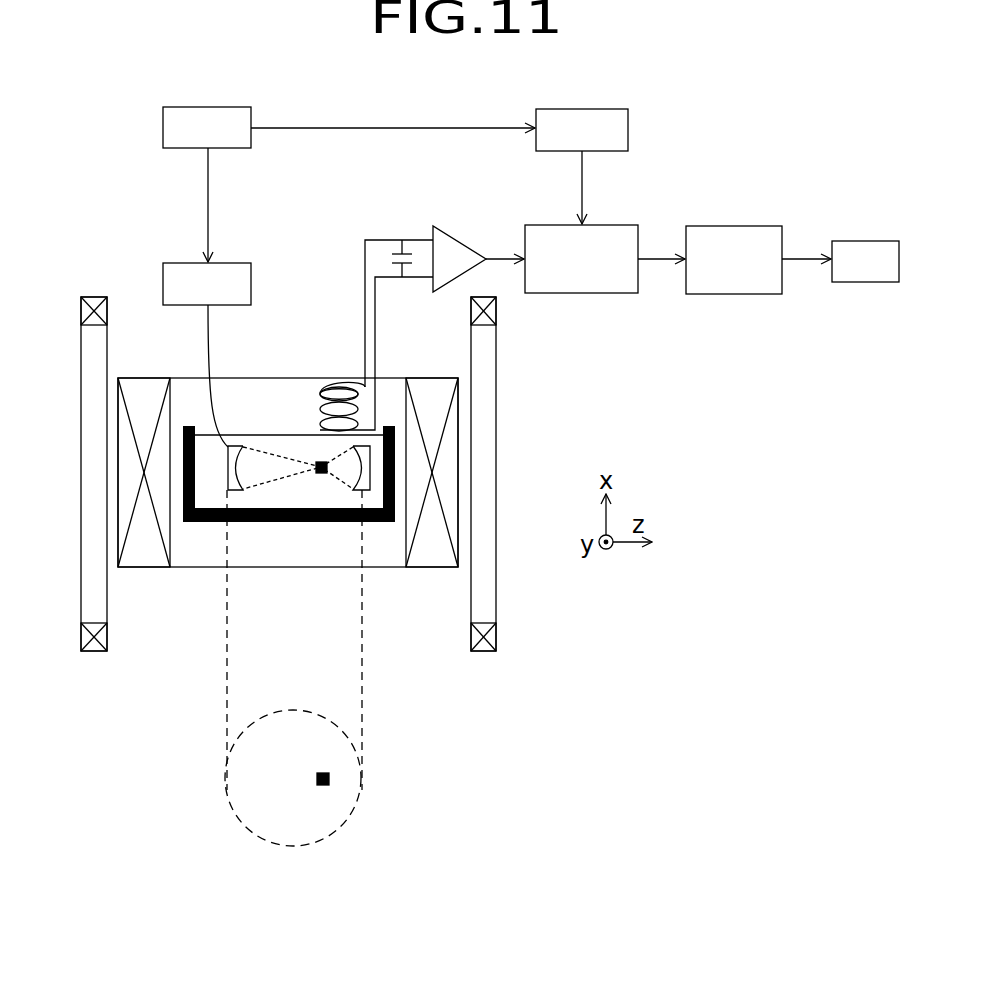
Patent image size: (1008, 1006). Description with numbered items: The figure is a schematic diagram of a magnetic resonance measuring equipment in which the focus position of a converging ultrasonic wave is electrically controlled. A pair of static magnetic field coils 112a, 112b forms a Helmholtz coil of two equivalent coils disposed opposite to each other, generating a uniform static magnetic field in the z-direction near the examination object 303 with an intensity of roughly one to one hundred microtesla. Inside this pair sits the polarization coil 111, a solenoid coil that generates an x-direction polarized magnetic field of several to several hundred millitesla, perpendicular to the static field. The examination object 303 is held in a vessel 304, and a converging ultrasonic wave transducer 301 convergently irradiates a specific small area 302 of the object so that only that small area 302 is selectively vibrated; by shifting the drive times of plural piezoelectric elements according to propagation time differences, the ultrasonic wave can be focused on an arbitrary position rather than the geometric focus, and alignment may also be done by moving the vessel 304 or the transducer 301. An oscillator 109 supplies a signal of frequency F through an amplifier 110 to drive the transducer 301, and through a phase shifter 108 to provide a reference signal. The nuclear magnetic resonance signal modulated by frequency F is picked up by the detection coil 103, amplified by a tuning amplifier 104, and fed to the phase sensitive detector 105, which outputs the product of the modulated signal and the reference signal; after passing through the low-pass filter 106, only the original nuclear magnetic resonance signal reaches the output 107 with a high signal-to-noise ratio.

The detection coil 103 is at (317, 390).
The tuning amplifier 104 is at (423, 222).
The phase sensitive detector 105 is at (588, 293).
The low-pass filter 106 is at (735, 295).
The output 107 is at (866, 283).
The phase shifter 108 is at (633, 130).
The oscillator 109 is at (150, 125).
The amplifier 110 is at (152, 276).
The polarization coil 111 is at (142, 568).
The static magnetic field coil 112a is at (88, 652).
The static magnetic field coil 112b is at (480, 654).
The converging ultrasonic wave transducer 301 is at (232, 446).
The small area of an examination object 302 is at (327, 475).
The examination object 303 is at (268, 500).
The vessel 304 is at (233, 523).